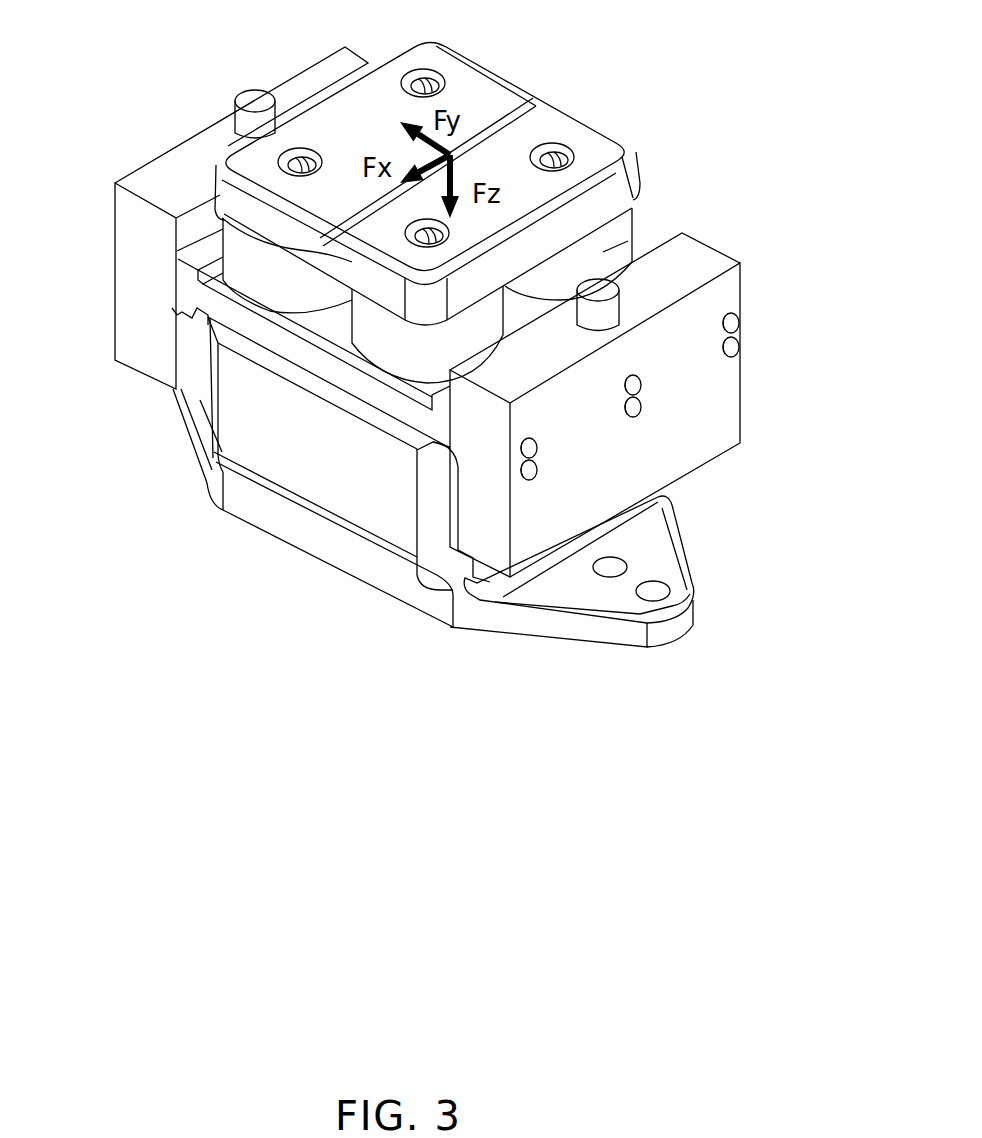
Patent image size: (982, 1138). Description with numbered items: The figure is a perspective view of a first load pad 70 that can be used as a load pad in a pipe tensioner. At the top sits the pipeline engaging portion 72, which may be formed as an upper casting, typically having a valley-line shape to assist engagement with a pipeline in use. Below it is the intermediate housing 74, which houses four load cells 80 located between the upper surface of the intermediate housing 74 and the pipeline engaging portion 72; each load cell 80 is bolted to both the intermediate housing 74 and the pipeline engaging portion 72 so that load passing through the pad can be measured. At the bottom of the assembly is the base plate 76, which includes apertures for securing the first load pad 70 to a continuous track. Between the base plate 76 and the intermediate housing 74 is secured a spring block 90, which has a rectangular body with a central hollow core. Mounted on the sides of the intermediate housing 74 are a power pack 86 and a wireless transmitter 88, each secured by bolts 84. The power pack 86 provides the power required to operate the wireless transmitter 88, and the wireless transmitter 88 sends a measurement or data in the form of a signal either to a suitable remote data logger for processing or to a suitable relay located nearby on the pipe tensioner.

The first load pad 70 is at (724, 63).
The pipeline engaging portion 72 is at (477, 62).
The intermediate housing 74 is at (190, 289).
The base plate 76 is at (672, 630).
The load cell 80 is at (600, 253).
The bolts 84 is at (634, 406).
The power pack 86 is at (135, 278).
The wireless transmitter 88 is at (677, 377).
The spring block 90 is at (382, 493).